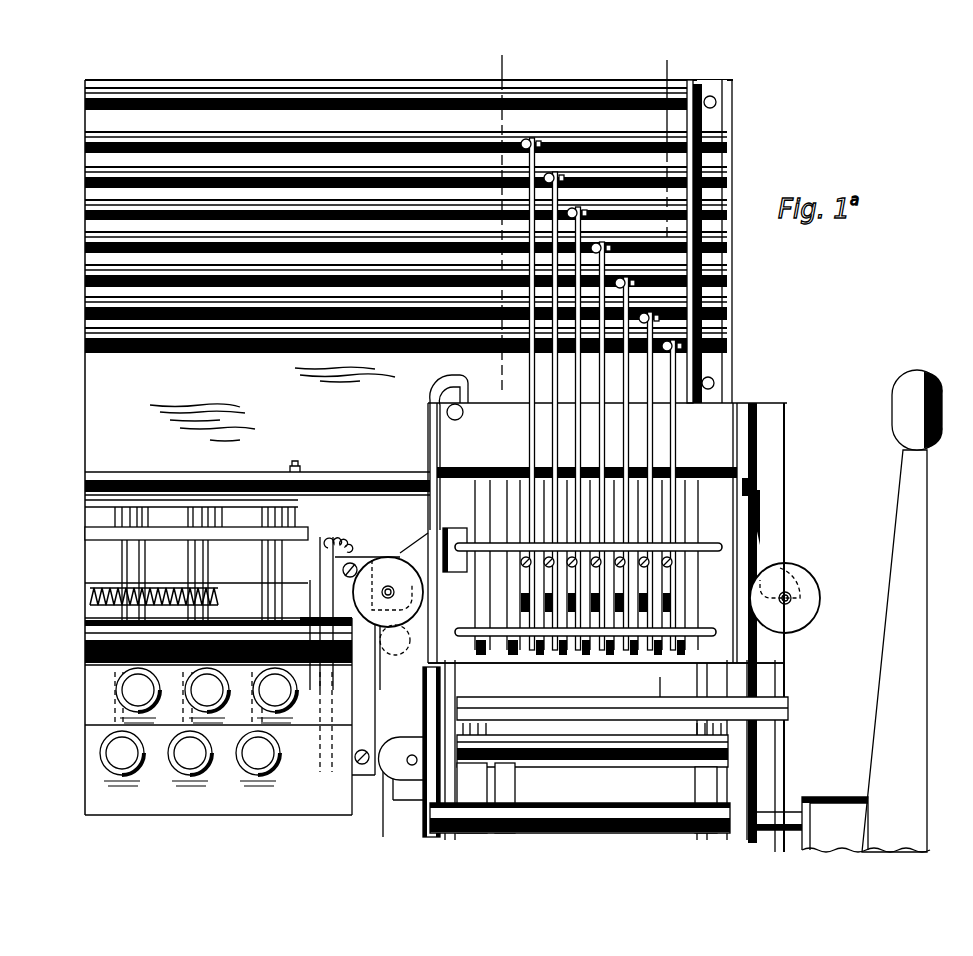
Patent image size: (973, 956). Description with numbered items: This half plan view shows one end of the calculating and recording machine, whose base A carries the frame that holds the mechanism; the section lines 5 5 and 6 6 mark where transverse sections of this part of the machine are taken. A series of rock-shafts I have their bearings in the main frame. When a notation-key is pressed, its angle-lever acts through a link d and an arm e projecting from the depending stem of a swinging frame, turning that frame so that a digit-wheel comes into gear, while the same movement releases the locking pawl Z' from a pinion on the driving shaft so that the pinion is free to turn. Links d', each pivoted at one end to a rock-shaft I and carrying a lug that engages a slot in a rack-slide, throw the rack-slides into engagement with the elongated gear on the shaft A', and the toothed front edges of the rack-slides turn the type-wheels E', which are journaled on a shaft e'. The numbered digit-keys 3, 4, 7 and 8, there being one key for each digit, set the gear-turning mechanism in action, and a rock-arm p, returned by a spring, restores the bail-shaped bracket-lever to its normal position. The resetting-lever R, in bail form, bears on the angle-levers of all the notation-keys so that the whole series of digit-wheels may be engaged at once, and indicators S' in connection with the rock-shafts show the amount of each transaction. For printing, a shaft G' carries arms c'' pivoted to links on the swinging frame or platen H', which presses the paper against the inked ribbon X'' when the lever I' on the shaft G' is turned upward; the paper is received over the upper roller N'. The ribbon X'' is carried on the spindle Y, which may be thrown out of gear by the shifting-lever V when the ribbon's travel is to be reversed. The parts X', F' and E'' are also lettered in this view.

The rock-shaft I is at (384, 435).
The section line 5 5 is at (499, 214).
The section line 6 6 is at (669, 147).
The base A is at (272, 404).
The shaft A' is at (257, 477).
The key lever assembly X' is at (292, 584).
The rock-arm p is at (331, 540).
The spool or spindle Y is at (396, 549).
The link d is at (601, 394).
The link d' is at (478, 452).
The bar F' is at (597, 532).
The resetting-lever R is at (757, 502).
The inked ribbon X'' is at (782, 517).
The indicator S' is at (619, 572).
The locking arm or pawl Z' is at (594, 567).
The shaft e' is at (589, 622).
The lever I' is at (846, 611).
The type-wheel E' is at (606, 675).
The post E'' is at (634, 691).
The swinging frame or platen H' is at (639, 719).
The upper roller N' is at (592, 761).
The arm e is at (592, 754).
The arm c'' is at (587, 798).
The shaft G' is at (580, 806).
The shifting-lever V is at (383, 825).
The digit-key 3 is at (122, 758).
The digit-key 4 is at (190, 758).
The digit-key 7 is at (207, 695).
The digit-key 8 is at (138, 695).